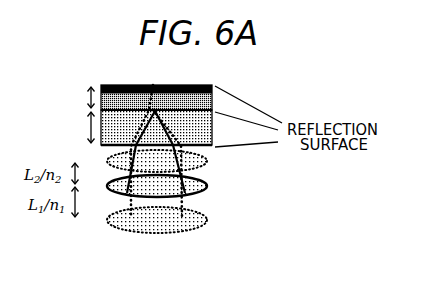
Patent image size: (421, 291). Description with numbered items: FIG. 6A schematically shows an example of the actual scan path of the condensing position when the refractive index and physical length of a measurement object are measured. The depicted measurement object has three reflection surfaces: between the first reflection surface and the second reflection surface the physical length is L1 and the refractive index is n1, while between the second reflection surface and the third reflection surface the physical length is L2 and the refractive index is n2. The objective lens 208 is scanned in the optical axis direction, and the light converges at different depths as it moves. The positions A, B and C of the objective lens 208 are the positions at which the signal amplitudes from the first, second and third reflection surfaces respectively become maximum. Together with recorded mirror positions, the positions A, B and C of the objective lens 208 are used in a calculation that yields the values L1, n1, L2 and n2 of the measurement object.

The objective lens 208 is at (197, 228).
The position A of the objective lens A is at (77, 218).
The position B of the objective lens B is at (77, 186).
The position C of the objective lens C is at (77, 162).
The refractive index n1 is at (166, 127).
The refractive index n2 is at (166, 97).
The physical length L1 is at (78, 127).
The physical length L2 is at (78, 96).